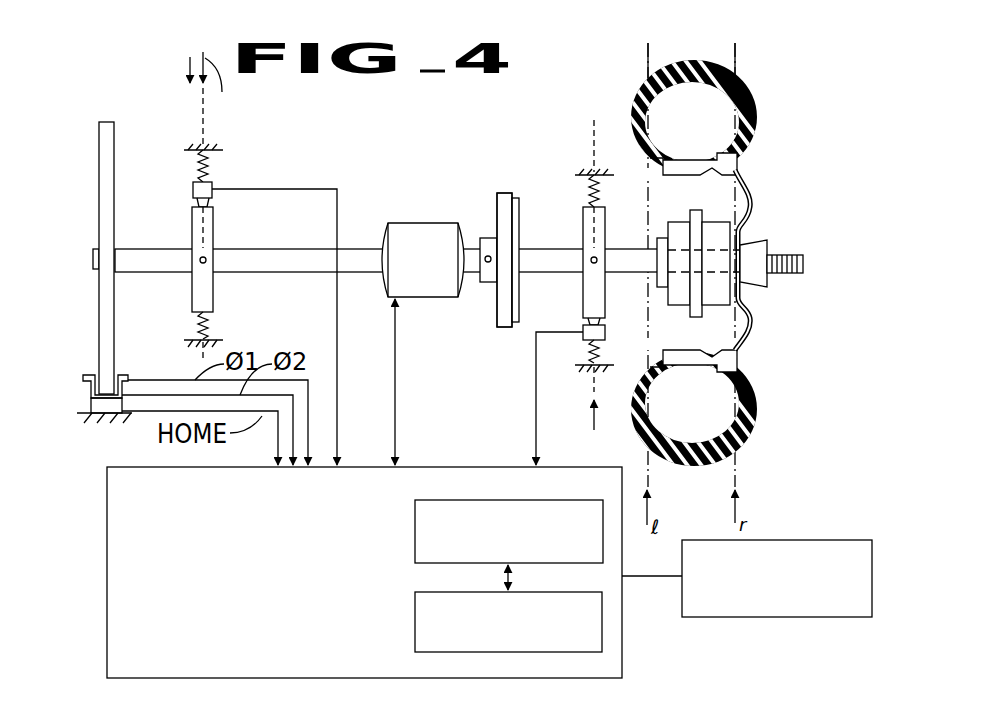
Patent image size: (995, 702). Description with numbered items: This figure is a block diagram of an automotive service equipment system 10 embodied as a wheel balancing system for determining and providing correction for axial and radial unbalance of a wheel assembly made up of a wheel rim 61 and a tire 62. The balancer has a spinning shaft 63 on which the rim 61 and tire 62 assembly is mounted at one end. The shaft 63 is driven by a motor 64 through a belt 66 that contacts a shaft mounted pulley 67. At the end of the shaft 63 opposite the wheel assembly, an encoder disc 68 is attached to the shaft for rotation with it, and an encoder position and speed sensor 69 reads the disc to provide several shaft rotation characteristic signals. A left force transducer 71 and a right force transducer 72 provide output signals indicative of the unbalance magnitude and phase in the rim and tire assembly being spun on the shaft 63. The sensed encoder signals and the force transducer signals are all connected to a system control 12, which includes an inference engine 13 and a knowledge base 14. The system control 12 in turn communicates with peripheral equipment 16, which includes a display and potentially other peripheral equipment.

The automotive service equipment system 10 is at (690, 638).
The system control 12 is at (359, 565).
The inference engine 13 is at (486, 500).
The knowledge base 14 is at (587, 652).
The peripheral equipment 16 is at (798, 540).
The wheel rim 61 is at (758, 422).
The tire 62 is at (758, 118).
The shaft 63 is at (313, 248).
The motor 64 is at (432, 222).
The belt 66 is at (505, 328).
The shaft mounted pulley 67 is at (495, 200).
The encoder disc 68 is at (98, 158).
The encoder position and speed sensor 69 is at (121, 376).
The left force transducer 71 is at (213, 184).
The right force transducer 72 is at (583, 326).